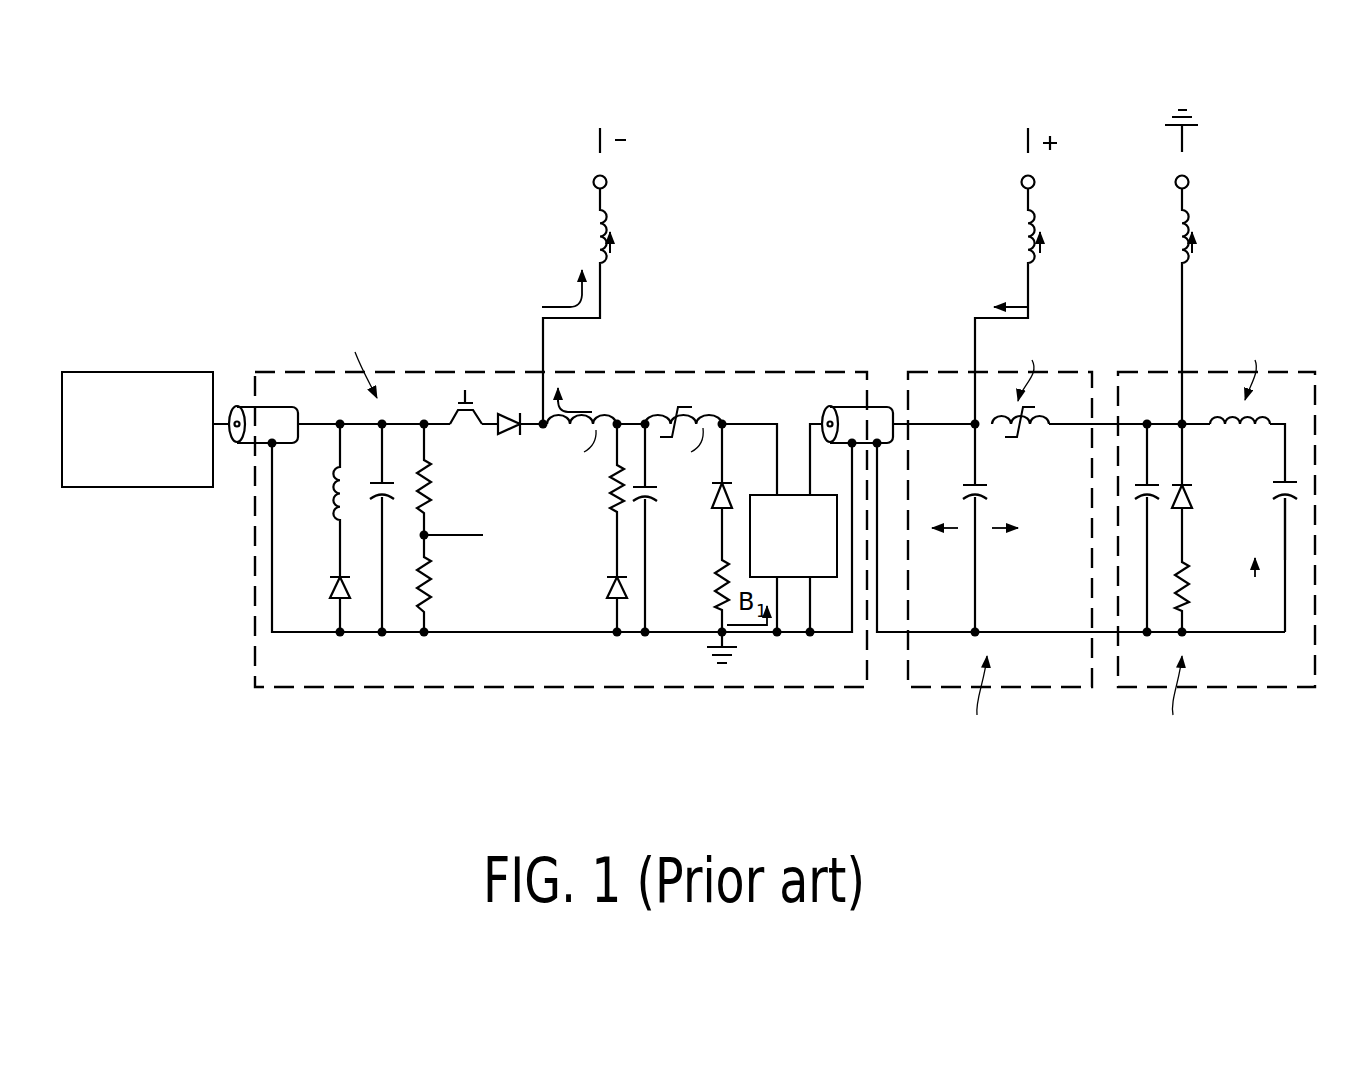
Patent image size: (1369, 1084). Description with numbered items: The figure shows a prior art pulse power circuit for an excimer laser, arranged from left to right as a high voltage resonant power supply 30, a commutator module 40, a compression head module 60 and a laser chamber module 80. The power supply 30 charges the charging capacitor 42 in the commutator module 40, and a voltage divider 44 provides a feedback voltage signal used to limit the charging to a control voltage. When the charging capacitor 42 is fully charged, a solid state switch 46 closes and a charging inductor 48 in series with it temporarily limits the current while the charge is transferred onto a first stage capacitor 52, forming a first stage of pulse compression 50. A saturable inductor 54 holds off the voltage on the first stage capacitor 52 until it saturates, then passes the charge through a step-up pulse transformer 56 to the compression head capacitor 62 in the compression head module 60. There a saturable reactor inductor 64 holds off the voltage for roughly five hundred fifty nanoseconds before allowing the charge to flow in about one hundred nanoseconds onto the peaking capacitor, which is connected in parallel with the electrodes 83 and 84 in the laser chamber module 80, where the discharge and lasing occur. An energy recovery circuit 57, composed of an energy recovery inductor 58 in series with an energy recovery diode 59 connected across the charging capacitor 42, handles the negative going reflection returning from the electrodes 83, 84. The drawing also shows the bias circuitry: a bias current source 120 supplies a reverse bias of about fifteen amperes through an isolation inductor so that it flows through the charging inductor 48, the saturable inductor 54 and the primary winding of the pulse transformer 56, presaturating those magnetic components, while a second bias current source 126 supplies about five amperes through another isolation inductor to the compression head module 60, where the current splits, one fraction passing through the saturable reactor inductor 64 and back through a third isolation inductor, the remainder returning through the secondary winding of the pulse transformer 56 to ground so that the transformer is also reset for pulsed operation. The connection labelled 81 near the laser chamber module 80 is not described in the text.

The high voltage resonant power supply 30 is at (130, 372).
The bias current source 120 is at (640, 174).
The second bias current source 126 is at (1075, 174).
The solid state switch 46 is at (465, 390).
The commutator module 40 is at (558, 373).
The charging inductor L0 48 is at (649, 396).
The saturable inductor L1 54 is at (706, 402).
The compression head module 60 is at (945, 372).
The bias inductor connection 81 is at (1219, 400).
The laser chamber module 80 is at (1302, 375).
The energy recovery inductor 58 is at (335, 490).
The energy recovery diode 59 is at (330, 588).
The capacitor Cp-1 62 is at (963, 488).
The saturable reactor inductor Lp-1 64 is at (1043, 436).
The electrode 84 is at (1295, 470).
The electrode 83 is at (1295, 529).
The energy recovery circuit 57 is at (338, 658).
The charging capacitor C0 42 is at (401, 565).
The voltage divider 44 is at (426, 657).
The first stage of pulse compression 50 is at (600, 700).
The first stage capacitor C1 52 is at (668, 566).
The pulse transformer 56 is at (795, 648).